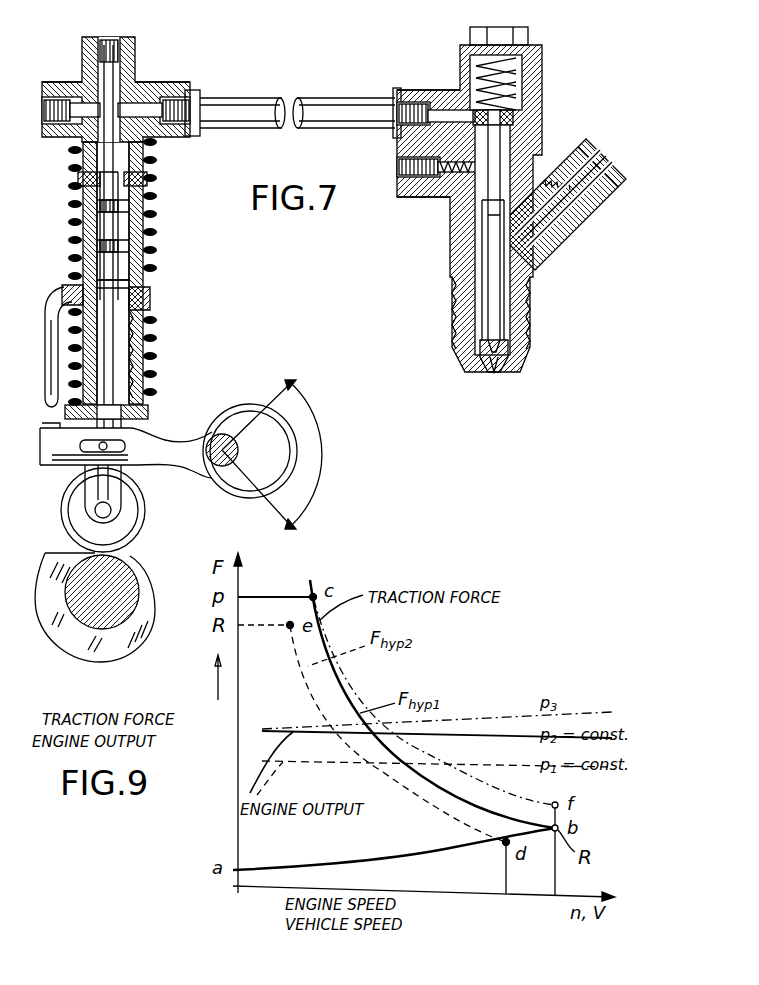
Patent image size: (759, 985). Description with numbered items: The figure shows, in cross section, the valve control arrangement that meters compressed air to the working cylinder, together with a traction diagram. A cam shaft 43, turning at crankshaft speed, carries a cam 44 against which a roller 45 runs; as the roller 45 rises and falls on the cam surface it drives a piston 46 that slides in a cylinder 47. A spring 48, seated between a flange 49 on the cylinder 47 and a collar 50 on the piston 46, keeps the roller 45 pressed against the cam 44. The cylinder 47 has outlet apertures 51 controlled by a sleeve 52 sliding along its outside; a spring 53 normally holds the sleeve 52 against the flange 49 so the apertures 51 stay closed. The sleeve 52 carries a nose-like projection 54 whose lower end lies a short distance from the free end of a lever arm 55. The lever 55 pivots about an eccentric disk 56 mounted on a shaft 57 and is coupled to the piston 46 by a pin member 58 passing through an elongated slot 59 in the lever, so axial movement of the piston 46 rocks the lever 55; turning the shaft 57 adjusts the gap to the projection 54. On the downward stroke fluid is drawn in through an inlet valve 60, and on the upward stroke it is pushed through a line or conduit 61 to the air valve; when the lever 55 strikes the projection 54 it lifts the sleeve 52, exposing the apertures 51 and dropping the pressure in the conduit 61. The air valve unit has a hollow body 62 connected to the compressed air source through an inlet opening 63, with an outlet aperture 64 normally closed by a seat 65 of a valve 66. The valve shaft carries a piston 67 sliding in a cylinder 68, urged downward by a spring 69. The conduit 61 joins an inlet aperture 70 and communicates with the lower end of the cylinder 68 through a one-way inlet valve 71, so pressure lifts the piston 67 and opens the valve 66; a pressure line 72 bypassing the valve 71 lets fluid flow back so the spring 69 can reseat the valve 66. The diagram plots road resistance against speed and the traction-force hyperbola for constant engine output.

The cam shaft 43 is at (125, 580).
The cam 44 is at (68, 643).
The roller 45 is at (70, 508).
The piston 46 is at (156, 232).
The cylinder 47 is at (108, 205).
The spring 48 is at (143, 360).
The flange 49 is at (151, 300).
The collar 50 is at (148, 416).
The outlet apertures 51 is at (80, 176).
The sleeve 52 is at (72, 280).
The spring 53 is at (80, 192).
The nose-like projection 54 is at (45, 332).
The lever arm 55 is at (152, 445).
The disk 56 is at (230, 410).
The shaft 57 is at (212, 468).
The pin member 58 is at (110, 455).
The elongated slot 59 is at (60, 465).
The inlet valve 60 is at (88, 70).
The line or conduit 61 is at (230, 97).
The hollow body 62 is at (452, 262).
The inlet opening 63 is at (590, 180).
The outlet aperture 64 is at (494, 372).
The seat 65 is at (462, 356).
The valve 66 is at (495, 297).
The piston 67 is at (520, 116).
The cylinder 68 is at (538, 108).
The spring 69 is at (527, 45).
The inlet aperture 70 is at (398, 100).
The one-way inlet valve 71 is at (440, 163).
The pressure line 72 is at (435, 92).